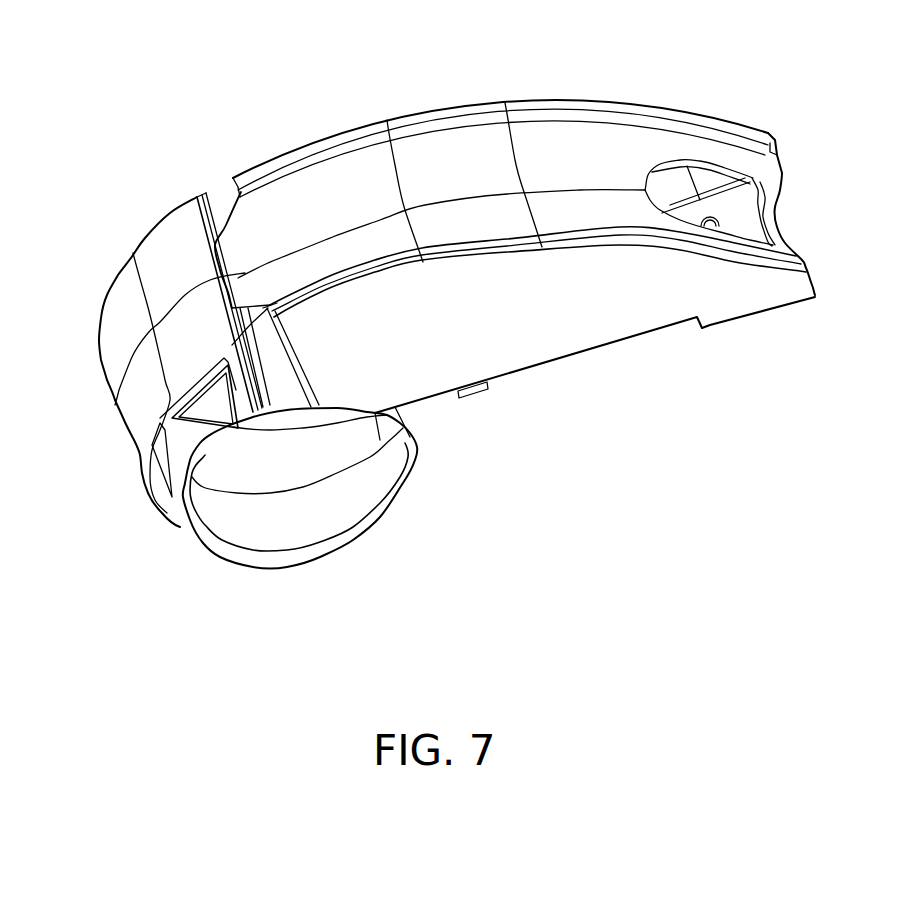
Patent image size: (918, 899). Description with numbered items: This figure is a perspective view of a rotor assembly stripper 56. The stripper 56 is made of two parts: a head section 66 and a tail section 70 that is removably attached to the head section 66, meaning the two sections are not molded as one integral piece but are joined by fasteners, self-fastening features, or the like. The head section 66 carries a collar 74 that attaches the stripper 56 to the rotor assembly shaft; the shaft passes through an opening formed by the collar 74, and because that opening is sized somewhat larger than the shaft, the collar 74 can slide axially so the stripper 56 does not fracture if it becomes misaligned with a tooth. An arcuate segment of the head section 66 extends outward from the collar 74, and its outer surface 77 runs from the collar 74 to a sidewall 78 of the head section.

The rotor assembly stripper 56 is at (403, 96).
The head section 66 is at (172, 512).
The tail section 70 is at (600, 347).
The collar 74 is at (360, 543).
The outer surface 77 is at (127, 295).
The sidewall 78 is at (204, 193).